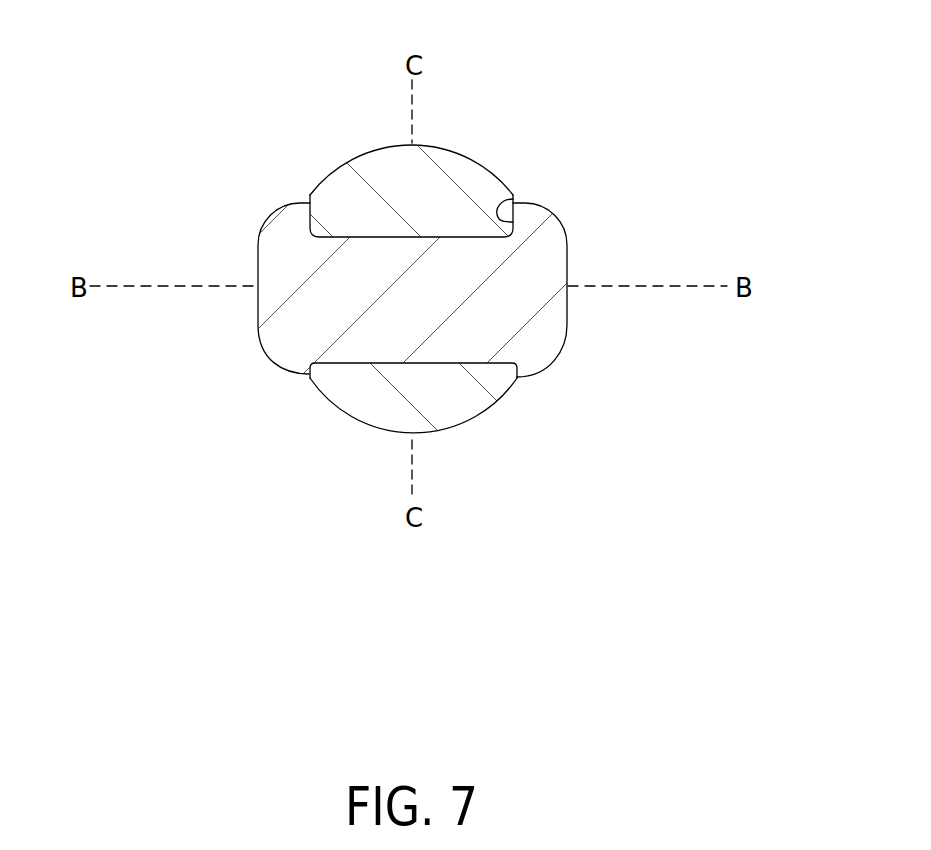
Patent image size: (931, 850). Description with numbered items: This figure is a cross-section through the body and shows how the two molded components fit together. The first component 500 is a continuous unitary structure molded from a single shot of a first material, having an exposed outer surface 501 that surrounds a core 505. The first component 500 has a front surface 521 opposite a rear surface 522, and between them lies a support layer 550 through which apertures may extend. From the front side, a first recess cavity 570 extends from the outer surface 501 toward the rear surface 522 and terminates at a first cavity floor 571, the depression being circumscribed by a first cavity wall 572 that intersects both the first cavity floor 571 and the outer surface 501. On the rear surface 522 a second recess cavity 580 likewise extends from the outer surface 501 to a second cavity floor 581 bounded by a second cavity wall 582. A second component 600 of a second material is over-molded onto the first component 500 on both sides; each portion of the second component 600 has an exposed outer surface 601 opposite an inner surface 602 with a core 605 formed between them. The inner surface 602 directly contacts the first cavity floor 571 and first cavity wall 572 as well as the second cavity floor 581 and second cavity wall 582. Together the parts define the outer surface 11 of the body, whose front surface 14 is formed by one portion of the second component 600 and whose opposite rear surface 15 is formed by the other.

The first component 500 is at (513, 272).
The outer surface 501 is at (258, 277).
The core 505 is at (323, 300).
The front surface 521 is at (300, 203).
The rear surface 522 is at (295, 365).
The support layer 550 is at (307, 372).
The first recess cavity 570 is at (421, 206).
The first cavity floor 571 is at (500, 199).
The first cavity wall 572 is at (513, 200).
The second recess cavity 580 is at (412, 385).
The second cavity floor 581 is at (436, 362).
The second cavity wall 582 is at (311, 380).
The second component 600 is at (452, 162).
The outer surface 601 is at (430, 147).
The inner surface 602 is at (378, 238).
The core 605 is at (397, 192).
The outer surface 11 is at (258, 250).
The front surface 14 is at (370, 148).
The rear surface 15 is at (443, 432).